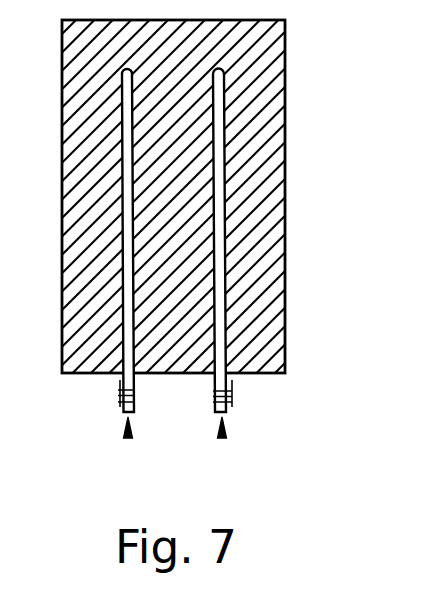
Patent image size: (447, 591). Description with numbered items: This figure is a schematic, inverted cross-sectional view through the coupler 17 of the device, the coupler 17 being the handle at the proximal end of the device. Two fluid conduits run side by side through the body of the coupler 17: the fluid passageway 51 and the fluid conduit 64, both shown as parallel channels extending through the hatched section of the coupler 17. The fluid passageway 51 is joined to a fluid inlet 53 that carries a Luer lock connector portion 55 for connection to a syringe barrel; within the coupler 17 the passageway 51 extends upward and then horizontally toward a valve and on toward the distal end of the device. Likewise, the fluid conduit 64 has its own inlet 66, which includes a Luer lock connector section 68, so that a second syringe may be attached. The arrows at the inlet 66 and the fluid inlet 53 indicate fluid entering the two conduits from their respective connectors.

The coupler 17 is at (263, 242).
The fluid conduit 64 is at (132, 232).
The fluid passageway 51 is at (213, 282).
The Luer lock connector section 68 is at (118, 398).
The Luer lock connector portion 55 is at (232, 390).
The inlet 66 is at (128, 438).
The fluid inlet 53 is at (222, 438).